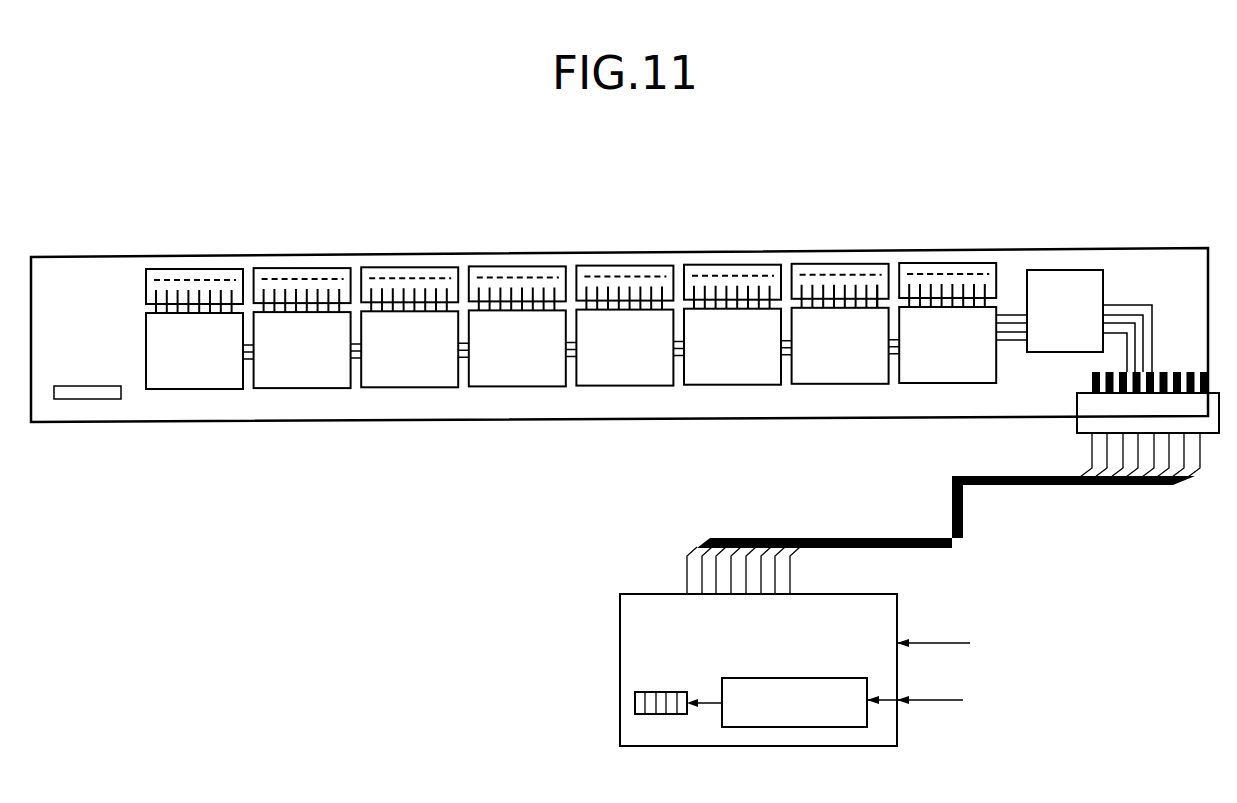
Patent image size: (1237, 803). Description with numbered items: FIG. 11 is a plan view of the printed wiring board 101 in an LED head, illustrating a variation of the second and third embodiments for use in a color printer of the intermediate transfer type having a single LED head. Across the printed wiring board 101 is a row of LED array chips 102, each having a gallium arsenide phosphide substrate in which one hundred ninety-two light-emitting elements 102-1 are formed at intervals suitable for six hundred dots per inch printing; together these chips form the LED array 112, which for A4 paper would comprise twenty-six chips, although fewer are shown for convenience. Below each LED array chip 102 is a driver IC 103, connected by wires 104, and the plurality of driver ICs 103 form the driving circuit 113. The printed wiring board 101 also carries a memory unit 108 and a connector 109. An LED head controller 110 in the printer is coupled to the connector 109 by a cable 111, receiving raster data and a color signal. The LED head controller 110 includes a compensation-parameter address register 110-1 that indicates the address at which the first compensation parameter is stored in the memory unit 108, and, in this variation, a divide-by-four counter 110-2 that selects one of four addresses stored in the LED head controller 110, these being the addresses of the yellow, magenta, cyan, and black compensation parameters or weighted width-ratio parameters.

The printed wiring board 101 is at (1167, 263).
The LED array chip 102 is at (972, 262).
The light-emitting element 102-1 is at (937, 270).
The driver IC 103 is at (936, 368).
The wire 104 is at (877, 290).
The memory unit 108 is at (1067, 269).
The connector 109 is at (1077, 417).
The LED head controller 110 is at (620, 628).
The compensation-parameter address register 110-1 is at (663, 715).
The divide-by-four counter 110-2 is at (788, 727).
The cable 111 is at (1010, 485).
The LED array 112 is at (142, 284).
The driving circuit 113 is at (144, 350).